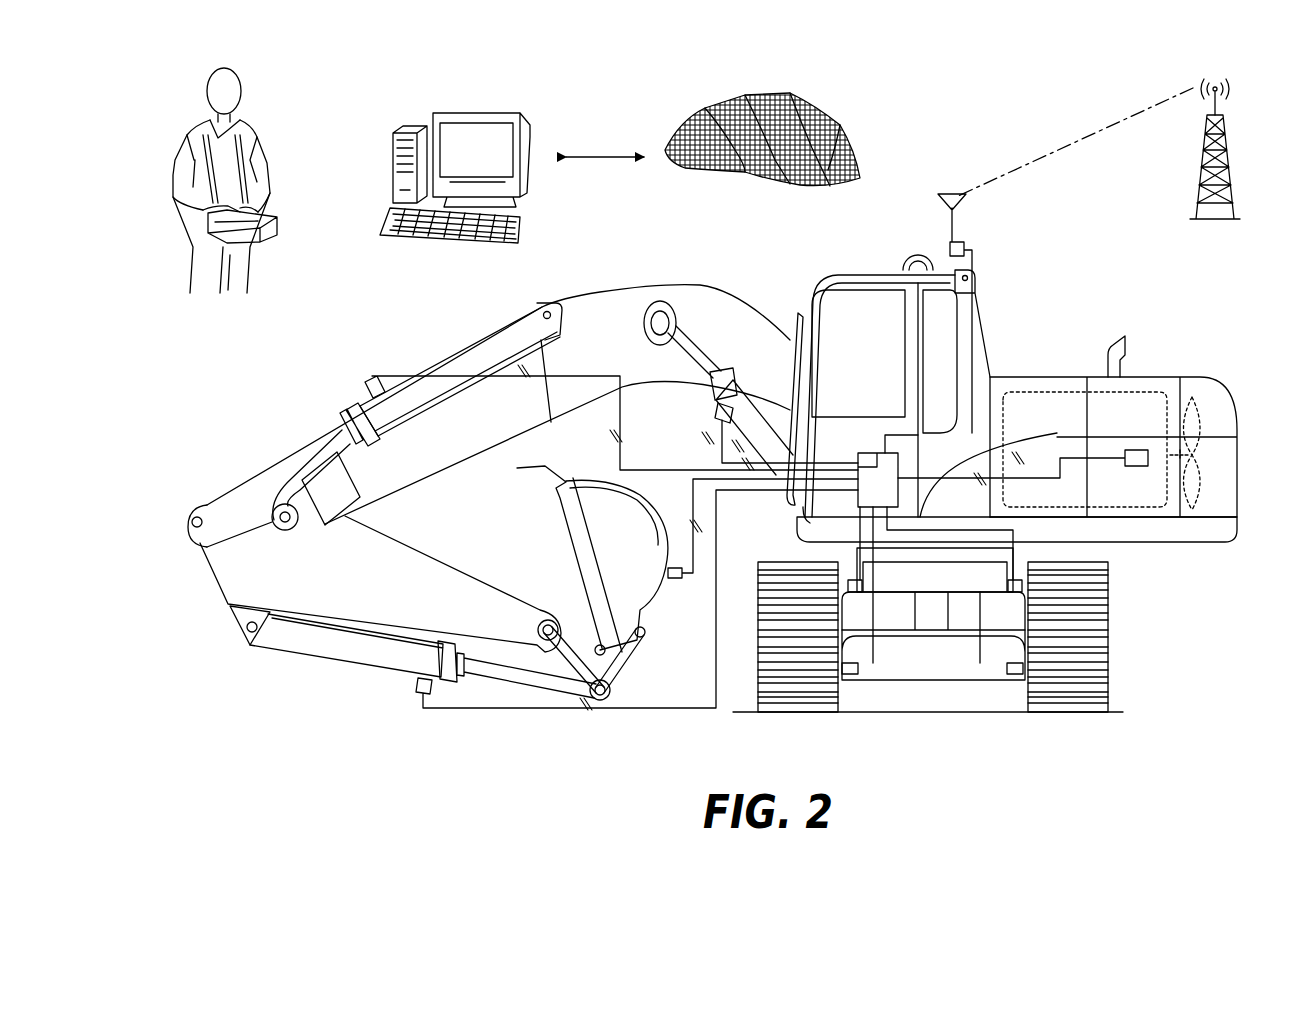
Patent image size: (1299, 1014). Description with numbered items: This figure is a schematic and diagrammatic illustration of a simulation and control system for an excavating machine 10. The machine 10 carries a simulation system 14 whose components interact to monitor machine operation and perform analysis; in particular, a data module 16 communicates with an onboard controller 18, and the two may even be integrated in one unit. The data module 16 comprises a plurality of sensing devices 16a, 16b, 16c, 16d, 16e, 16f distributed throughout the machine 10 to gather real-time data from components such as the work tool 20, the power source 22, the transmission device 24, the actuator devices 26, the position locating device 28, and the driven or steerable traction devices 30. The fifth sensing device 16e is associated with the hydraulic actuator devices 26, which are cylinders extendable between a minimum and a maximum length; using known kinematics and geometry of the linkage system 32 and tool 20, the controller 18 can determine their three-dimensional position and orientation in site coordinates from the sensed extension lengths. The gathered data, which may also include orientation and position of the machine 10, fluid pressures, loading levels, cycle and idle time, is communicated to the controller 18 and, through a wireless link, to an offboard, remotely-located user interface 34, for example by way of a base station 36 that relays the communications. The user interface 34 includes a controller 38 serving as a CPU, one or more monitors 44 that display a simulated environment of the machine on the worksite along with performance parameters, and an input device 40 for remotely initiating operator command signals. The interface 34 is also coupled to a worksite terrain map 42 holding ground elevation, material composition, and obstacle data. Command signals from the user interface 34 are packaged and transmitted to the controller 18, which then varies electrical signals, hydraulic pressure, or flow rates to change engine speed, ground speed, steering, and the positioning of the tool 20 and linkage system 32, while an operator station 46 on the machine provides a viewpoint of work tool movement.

The machine 10 is at (1183, 290).
The simulation system 14 is at (1250, 795).
The data module 16 is at (867, 460).
The sensing device 16a is at (968, 247).
The sensing device 16b is at (853, 578).
The sensing device 16c is at (858, 672).
The sensing device 16d is at (1137, 467).
The fifth sensing device 16e is at (367, 396).
The sensing device 16f is at (677, 579).
The controller 18 is at (878, 480).
The work tool 20 is at (592, 559).
The power source 22 is at (1167, 378).
The transmission device 24 is at (836, 653).
The actuator devices 26 is at (503, 333).
The position locating device 28 is at (906, 260).
The traction devices 30 is at (797, 700).
The linkage system 32 is at (397, 327).
The user interface 34 is at (557, 186).
The base station 36 is at (1248, 141).
The controller (CPU) 38 is at (400, 183).
The input device 40 is at (285, 206).
The worksite terrain map 42 is at (874, 132).
The monitor 44 is at (520, 124).
The operator station 46 is at (853, 320).